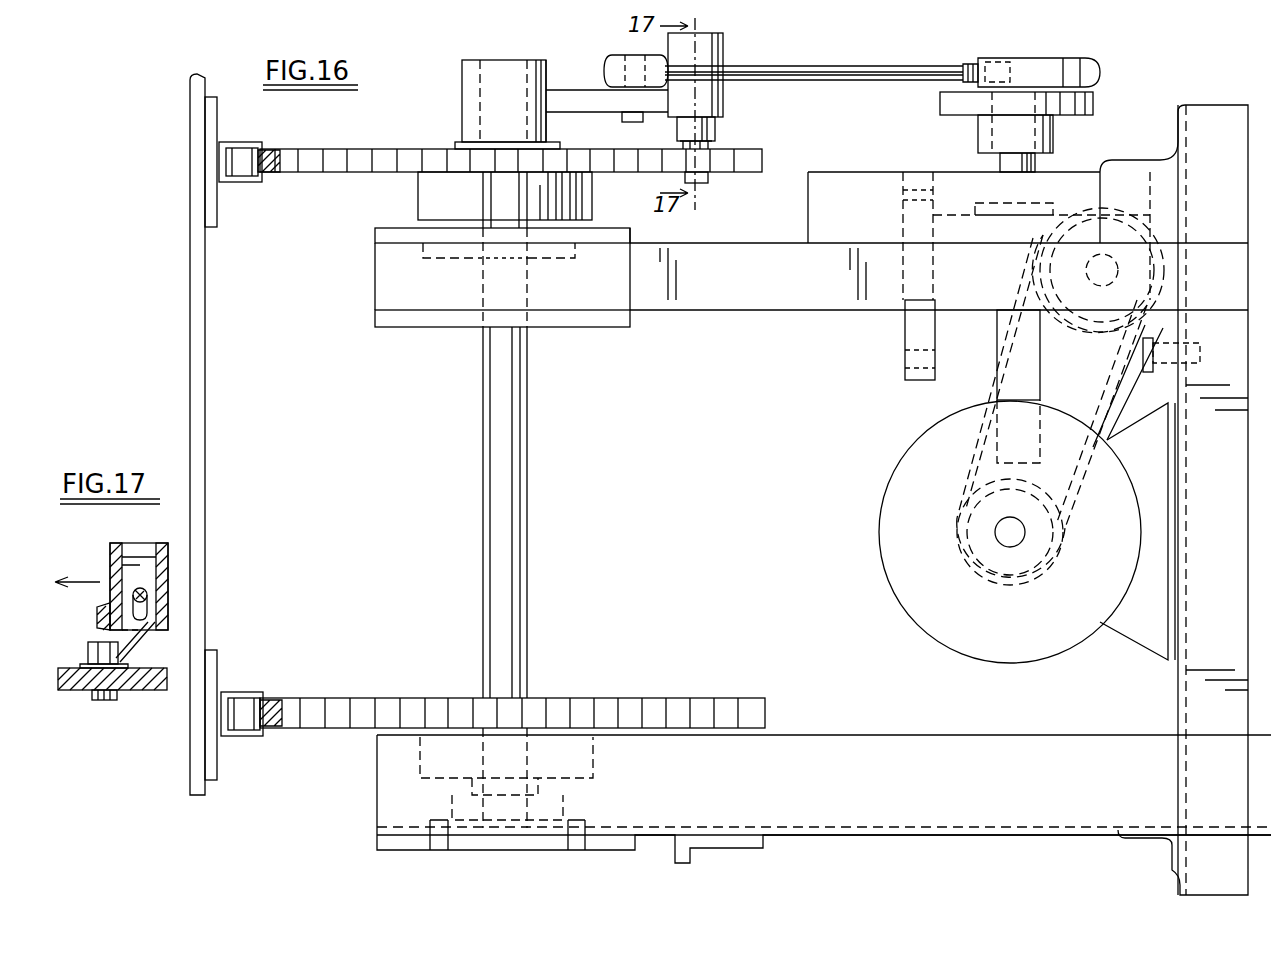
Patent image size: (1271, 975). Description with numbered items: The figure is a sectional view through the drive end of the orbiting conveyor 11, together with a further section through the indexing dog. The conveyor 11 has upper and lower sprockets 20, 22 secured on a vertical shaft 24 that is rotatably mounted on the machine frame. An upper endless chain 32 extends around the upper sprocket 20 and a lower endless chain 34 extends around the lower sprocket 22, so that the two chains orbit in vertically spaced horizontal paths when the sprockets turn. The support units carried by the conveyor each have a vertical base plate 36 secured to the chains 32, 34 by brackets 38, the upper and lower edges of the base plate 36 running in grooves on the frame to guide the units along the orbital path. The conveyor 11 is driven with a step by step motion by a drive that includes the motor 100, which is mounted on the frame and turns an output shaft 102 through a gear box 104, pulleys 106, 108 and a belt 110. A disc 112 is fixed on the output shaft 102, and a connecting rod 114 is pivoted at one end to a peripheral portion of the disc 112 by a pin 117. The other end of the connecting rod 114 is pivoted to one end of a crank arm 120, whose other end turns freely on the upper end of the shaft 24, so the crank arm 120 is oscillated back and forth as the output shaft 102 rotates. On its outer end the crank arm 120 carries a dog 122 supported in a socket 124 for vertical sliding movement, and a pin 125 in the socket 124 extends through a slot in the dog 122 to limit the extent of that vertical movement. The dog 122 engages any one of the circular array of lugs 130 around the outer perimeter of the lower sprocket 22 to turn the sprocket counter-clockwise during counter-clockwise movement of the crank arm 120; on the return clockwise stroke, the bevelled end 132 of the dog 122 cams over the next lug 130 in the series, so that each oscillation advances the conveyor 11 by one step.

In FIG. 16, the orbiting conveyor 11 is at (1234, 96).
In FIG. 16, the upper sprocket 20 is at (337, 175).
In FIG. 17, the upper sprocket 20 is at (155, 692).
In FIG. 16, the lower sprocket 22 is at (420, 700).
In FIG. 16, the vertical shaft 24 is at (494, 410).
In FIG. 16, the upper endless chain 32 is at (244, 183).
In FIG. 16, the lower endless chain 34 is at (260, 693).
In FIG. 16, the base plate 36 is at (204, 349).
In FIG. 16, the brackets 38 is at (213, 228).
In FIG. 16, the motor 100 is at (892, 587).
In FIG. 16, the output shaft 102 is at (998, 156).
In FIG. 16, the gear box 104 is at (950, 320).
In FIG. 16, the pulley 106 is at (1165, 272).
In FIG. 16, the pulley 108 is at (956, 532).
In FIG. 16, the belt 110 is at (1122, 374).
In FIG. 16, the disc 112 is at (955, 104).
In FIG. 16, the connecting rod 114 is at (828, 78).
In FIG. 16, the pin 117 is at (1078, 62).
In FIG. 16, the crank arm 120 is at (584, 91).
In FIG. 17, the crank arm 120 is at (106, 614).
In FIG. 16, the dog 122 is at (716, 128).
In FIG. 17, the dog 122 is at (142, 550).
In FIG. 16, the socket 124 is at (722, 62).
In FIG. 17, the socket 124 is at (110, 596).
In FIG. 17, the pin 125 is at (130, 592).
In FIG. 16, the lugs 130 is at (678, 130).
In FIG. 17, the lugs 130 is at (92, 652).
In FIG. 17, the bevelled end 132 is at (138, 644).